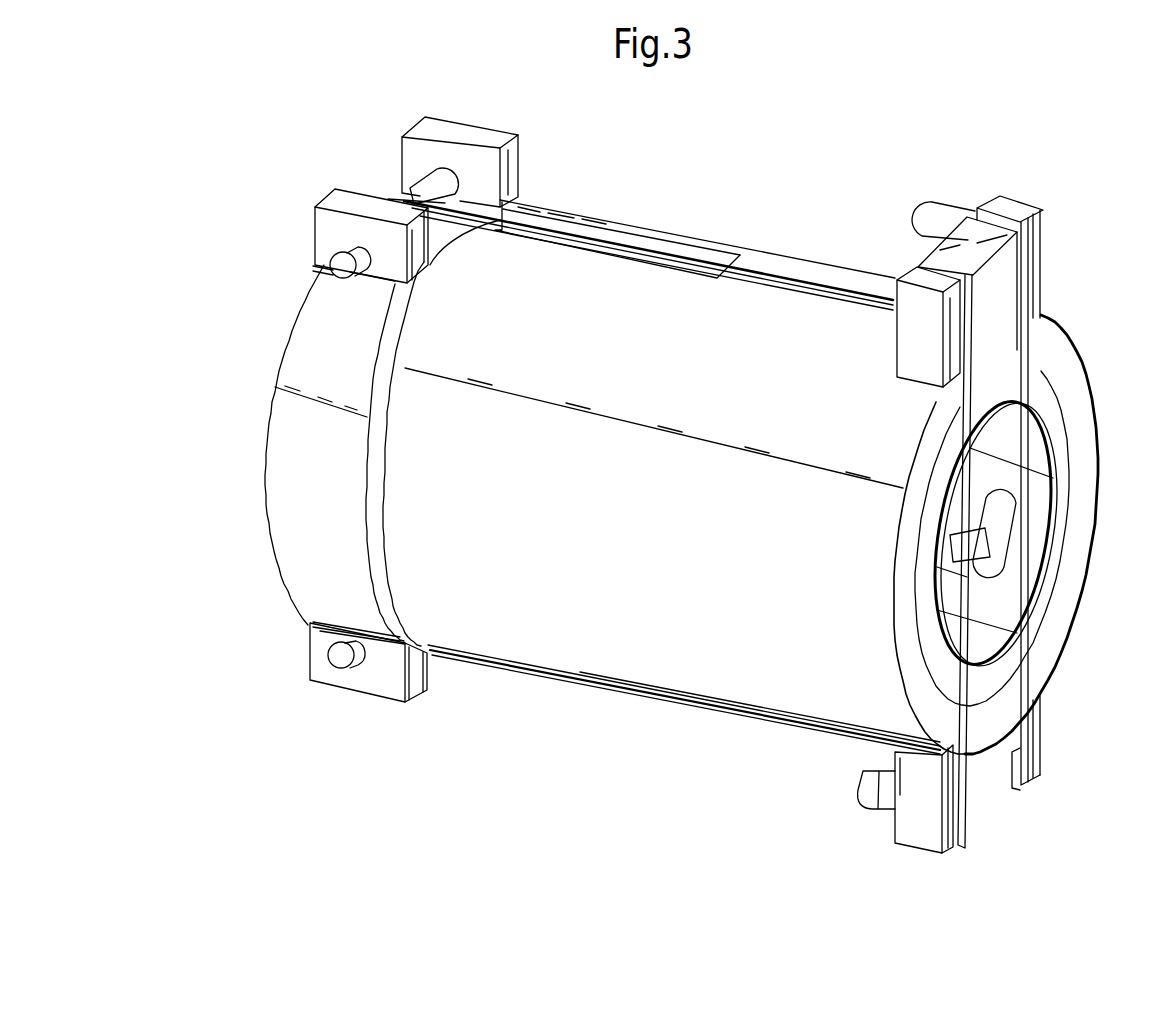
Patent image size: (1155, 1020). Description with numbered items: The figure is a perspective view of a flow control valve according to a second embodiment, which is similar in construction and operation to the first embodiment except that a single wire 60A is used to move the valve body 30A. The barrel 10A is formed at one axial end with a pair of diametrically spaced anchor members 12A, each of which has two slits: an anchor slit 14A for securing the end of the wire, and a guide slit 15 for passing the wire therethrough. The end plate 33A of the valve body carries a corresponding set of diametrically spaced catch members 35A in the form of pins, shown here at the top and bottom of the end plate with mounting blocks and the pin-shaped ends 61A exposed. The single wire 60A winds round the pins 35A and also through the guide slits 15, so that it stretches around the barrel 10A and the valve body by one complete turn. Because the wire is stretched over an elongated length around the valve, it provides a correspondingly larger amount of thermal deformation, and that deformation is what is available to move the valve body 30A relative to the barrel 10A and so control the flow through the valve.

The barrel 10A is at (698, 240).
The single wire 60A is at (776, 258).
The valve body 30A is at (280, 587).
The end plate 33A is at (282, 465).
The catch members 35A is at (428, 183).
The guide slit 15 is at (908, 268).
The bolt 61A is at (937, 213).
The anchor slit 14A is at (993, 220).
The anchor members 12A is at (1035, 215).